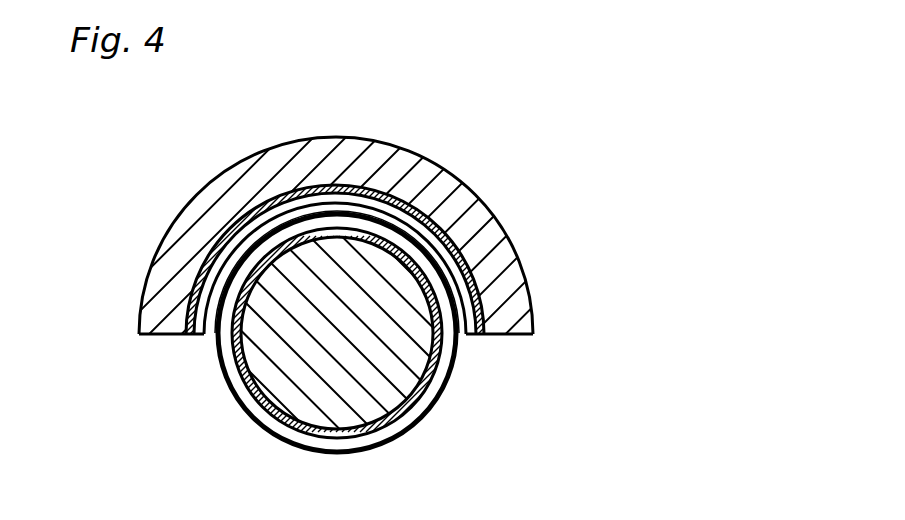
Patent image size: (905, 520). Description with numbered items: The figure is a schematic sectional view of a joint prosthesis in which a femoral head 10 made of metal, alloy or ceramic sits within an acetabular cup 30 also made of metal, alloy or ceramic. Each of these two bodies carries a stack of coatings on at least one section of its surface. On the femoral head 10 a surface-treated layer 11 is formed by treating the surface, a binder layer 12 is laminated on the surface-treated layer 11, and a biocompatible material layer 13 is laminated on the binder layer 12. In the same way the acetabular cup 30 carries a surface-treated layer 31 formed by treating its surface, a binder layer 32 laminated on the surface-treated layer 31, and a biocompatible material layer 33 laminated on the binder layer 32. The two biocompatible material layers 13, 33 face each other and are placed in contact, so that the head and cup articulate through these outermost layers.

The femoral head 10 is at (390, 410).
The surface-treated layer 11 is at (454, 343).
The binder layer 12 is at (440, 393).
The biocompatible material layer 13 is at (440, 393).
The acetabular cup 30 is at (450, 172).
The surface-treated layer 31 is at (476, 228).
The binder layer 32 is at (472, 275).
The biocompatible material layer 33 is at (472, 275).